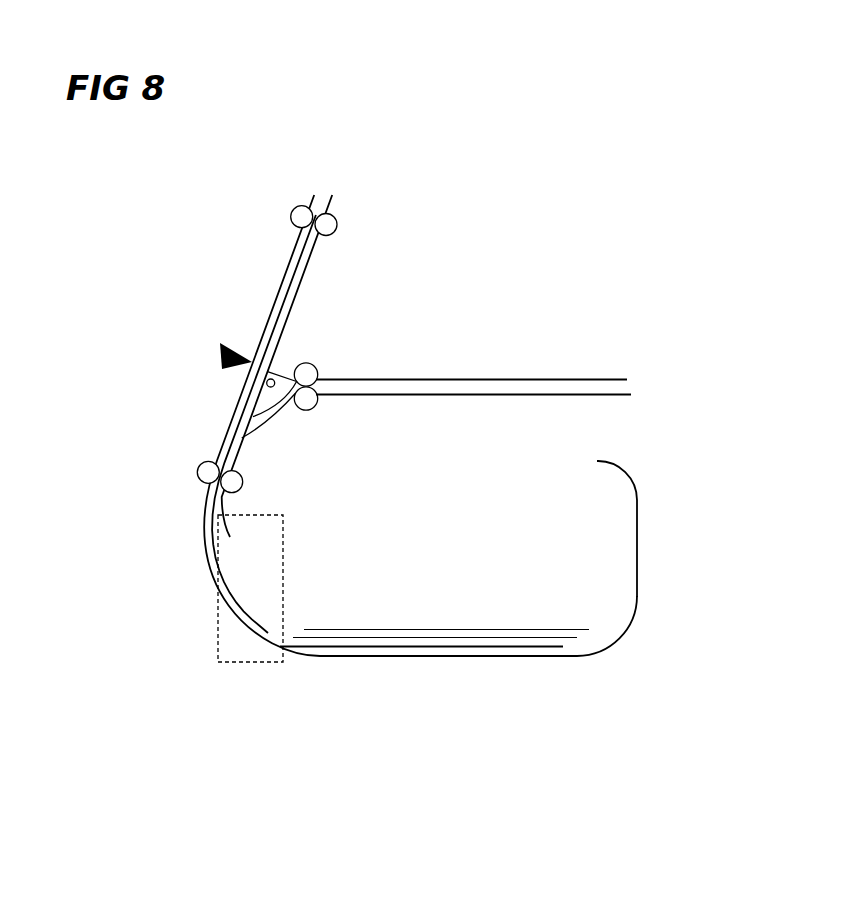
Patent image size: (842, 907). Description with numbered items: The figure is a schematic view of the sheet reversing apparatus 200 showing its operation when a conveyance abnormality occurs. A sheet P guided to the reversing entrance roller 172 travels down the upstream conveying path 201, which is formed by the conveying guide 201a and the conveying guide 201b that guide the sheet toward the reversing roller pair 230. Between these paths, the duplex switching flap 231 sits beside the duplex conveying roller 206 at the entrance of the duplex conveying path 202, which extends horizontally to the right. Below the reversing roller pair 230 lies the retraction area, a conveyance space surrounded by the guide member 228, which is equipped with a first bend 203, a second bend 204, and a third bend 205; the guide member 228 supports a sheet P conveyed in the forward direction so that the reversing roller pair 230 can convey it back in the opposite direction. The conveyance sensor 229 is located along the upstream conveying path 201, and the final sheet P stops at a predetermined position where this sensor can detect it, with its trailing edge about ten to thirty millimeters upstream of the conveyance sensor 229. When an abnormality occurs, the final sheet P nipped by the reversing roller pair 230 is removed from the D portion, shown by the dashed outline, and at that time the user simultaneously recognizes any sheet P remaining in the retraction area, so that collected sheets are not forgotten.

The reversing entrance roller 172 is at (292, 206).
The sheet reversing apparatus 200 is at (437, 284).
The upstream conveying path 201 is at (280, 307).
The conveying guide 201a is at (287, 268).
The conveying guide 201b is at (307, 265).
The duplex conveying path 202 is at (482, 377).
The first bend 203 is at (237, 630).
The second bend 204 is at (598, 646).
The third bend 205 is at (636, 493).
The duplex conveying roller 206 is at (312, 365).
The guide member 228 is at (358, 664).
The conveyance sensor 229 is at (221, 345).
The reversing roller pair 230 is at (198, 462).
The duplex switching flap 231 is at (277, 373).
The sheet P is at (205, 555).
The D portion D is at (218, 612).